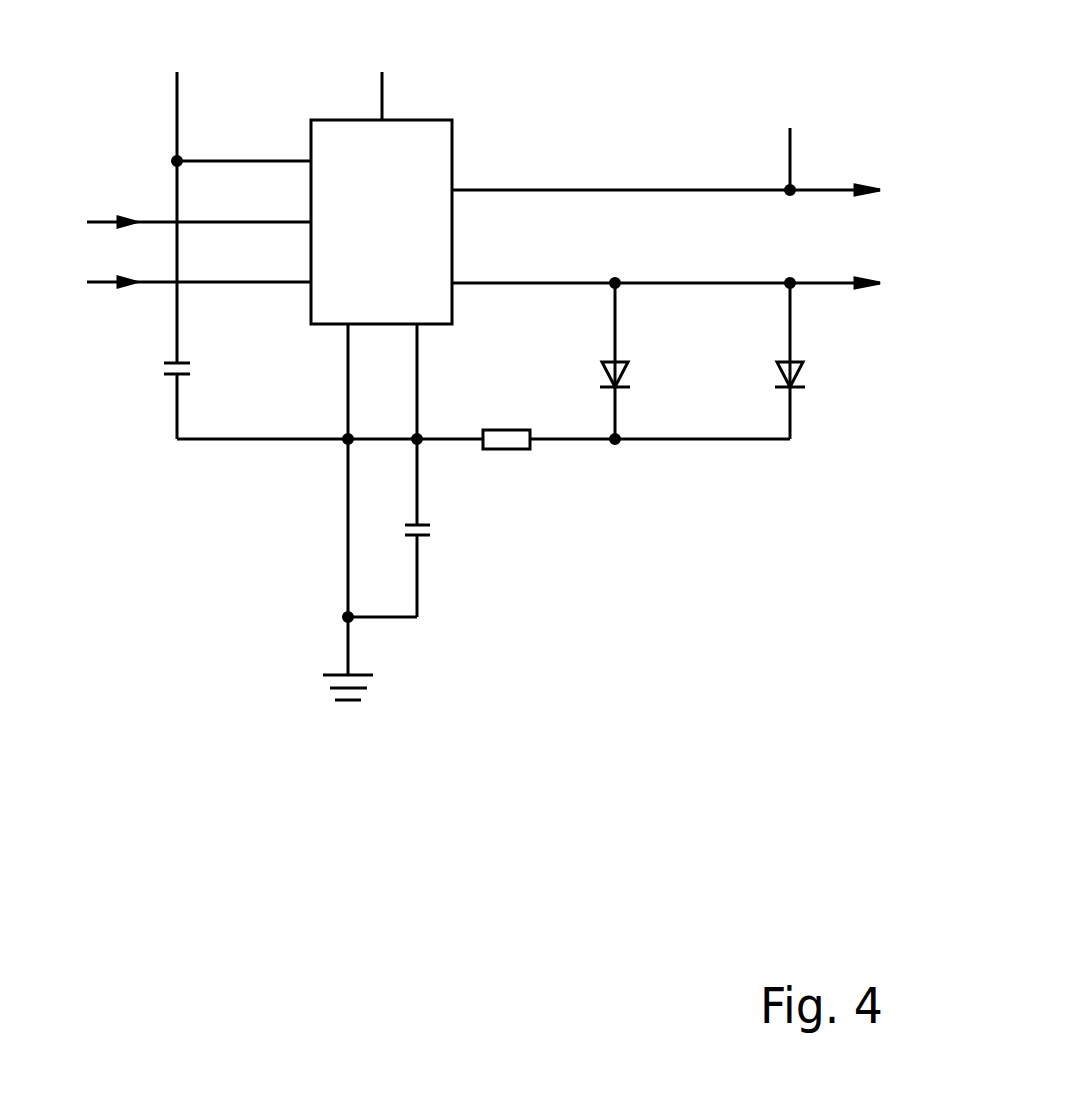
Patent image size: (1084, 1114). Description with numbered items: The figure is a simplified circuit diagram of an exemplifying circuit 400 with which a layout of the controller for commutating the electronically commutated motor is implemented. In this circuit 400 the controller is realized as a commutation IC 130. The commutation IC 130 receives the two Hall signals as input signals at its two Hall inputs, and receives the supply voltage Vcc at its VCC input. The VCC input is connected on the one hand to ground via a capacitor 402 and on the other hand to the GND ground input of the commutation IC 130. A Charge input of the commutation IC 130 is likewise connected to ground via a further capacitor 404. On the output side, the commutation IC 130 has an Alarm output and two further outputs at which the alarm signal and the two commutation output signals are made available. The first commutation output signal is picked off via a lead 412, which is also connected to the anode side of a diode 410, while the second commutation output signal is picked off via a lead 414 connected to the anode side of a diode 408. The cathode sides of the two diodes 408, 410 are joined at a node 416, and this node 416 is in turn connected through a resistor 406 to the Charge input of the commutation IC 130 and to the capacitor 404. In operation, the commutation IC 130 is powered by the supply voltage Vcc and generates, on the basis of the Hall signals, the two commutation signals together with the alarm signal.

The exemplifying circuit 400 is at (775, 42).
The commutation IC 130 is at (437, 120).
The capacitor 402 is at (172, 388).
The capacitor 404 is at (423, 527).
The resistor 406 is at (503, 430).
The diode 408 is at (622, 360).
The diode 410 is at (797, 360).
The lead 412 is at (597, 190).
The lead 414 is at (592, 283).
The node 416 is at (617, 441).